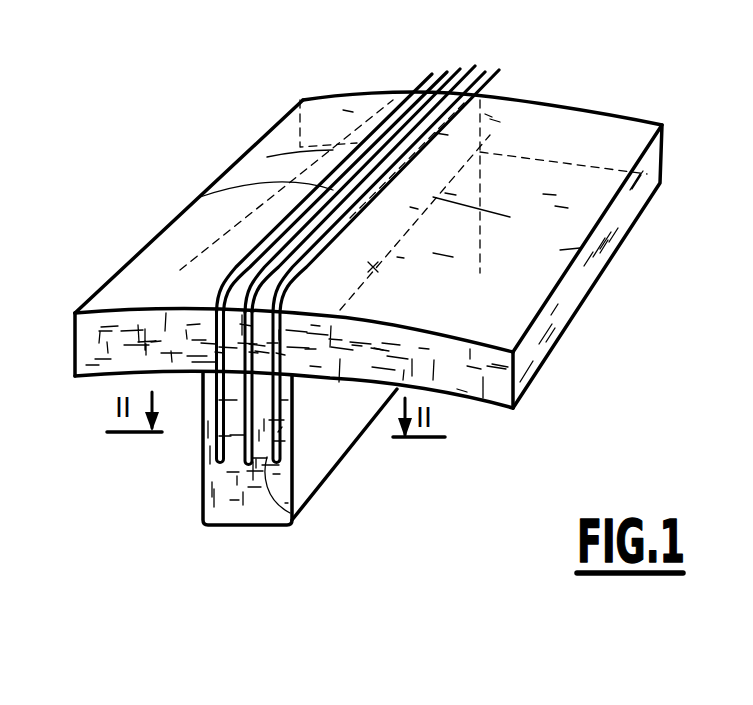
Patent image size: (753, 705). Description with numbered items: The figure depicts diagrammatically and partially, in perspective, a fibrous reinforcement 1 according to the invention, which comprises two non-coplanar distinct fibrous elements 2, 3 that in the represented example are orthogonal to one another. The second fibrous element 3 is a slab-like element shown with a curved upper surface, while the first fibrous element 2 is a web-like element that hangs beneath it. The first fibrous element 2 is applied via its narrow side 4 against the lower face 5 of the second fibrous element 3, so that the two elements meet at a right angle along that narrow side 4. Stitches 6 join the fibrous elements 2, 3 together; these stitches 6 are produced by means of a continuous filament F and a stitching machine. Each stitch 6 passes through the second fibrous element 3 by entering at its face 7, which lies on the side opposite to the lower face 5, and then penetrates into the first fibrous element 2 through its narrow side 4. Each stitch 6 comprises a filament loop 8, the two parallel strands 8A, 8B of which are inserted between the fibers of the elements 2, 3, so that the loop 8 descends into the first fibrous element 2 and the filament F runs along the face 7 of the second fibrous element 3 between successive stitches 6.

The fibrous reinforcement 1 is at (168, 163).
The first fibrous element 2 is at (275, 517).
The second fibrous element 3 is at (557, 264).
The narrow side 4 is at (380, 270).
The lower face 5 is at (92, 385).
The stitches 6 is at (273, 243).
The face 7 is at (575, 177).
The filament loop 8 is at (240, 452).
The parallel strand 8A is at (290, 513).
The parallel strand 8B is at (282, 427).
The continuous filament F is at (423, 85).